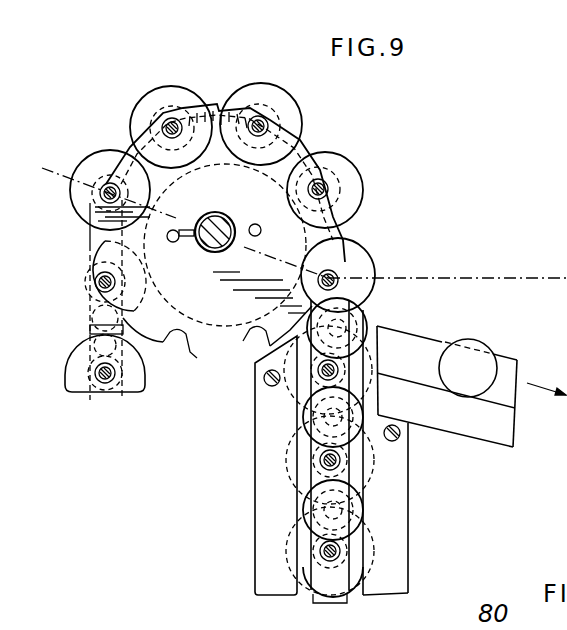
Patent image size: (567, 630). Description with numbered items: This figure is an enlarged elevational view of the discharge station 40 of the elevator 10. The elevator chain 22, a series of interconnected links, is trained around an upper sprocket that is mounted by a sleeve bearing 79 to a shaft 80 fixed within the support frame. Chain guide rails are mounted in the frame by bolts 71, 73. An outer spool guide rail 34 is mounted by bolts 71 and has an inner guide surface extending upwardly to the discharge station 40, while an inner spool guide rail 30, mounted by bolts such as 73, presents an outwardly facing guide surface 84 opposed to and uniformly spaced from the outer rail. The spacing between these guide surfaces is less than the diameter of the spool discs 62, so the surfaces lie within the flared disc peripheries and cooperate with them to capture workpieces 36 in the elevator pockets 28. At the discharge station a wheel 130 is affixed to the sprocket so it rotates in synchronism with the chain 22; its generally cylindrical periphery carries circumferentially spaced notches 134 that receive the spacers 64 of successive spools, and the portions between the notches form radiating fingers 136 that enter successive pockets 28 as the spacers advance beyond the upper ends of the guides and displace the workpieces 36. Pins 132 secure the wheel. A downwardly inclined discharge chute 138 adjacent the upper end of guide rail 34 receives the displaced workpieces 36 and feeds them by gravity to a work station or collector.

The axis / reference direction 10 is at (53, 167).
The chain 22 is at (311, 139).
The spool 28 is at (293, 98).
The inner spool guide rail 30 is at (400, 513).
The outer spool guide rail 34 is at (262, 533).
The workpiece 36 is at (492, 352).
The discharge station 40 is at (467, 242).
The spool disc 62 is at (248, 92).
The spacer 64 is at (99, 196).
The bolt 71 is at (396, 441).
The bolt 73 is at (272, 388).
The sleeve bearing 79 is at (214, 212).
The shaft 80 is at (214, 253).
The guide surface 84 is at (303, 470).
The wheel 130 is at (216, 360).
The pins 132 is at (173, 242).
The notch 134 is at (253, 378).
The radiating finger 136 is at (330, 160).
The discharge chute 138 is at (493, 440).